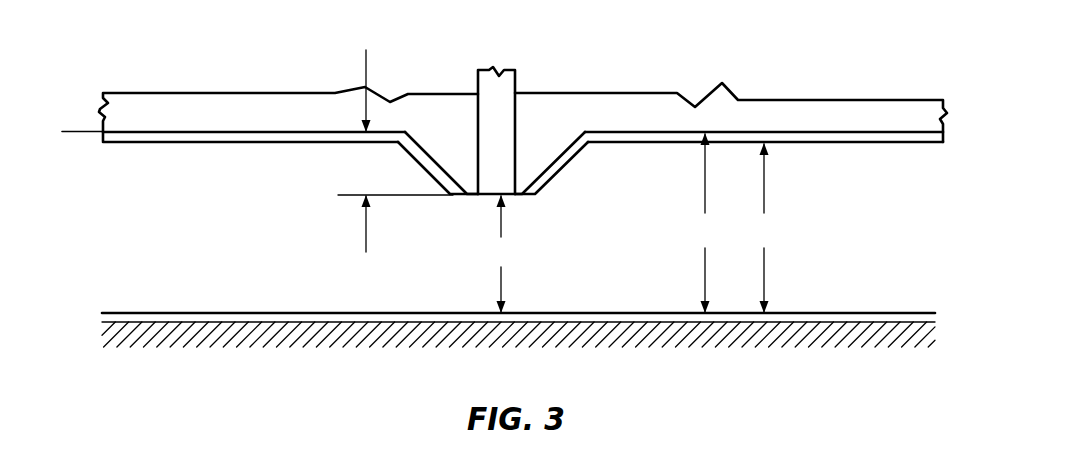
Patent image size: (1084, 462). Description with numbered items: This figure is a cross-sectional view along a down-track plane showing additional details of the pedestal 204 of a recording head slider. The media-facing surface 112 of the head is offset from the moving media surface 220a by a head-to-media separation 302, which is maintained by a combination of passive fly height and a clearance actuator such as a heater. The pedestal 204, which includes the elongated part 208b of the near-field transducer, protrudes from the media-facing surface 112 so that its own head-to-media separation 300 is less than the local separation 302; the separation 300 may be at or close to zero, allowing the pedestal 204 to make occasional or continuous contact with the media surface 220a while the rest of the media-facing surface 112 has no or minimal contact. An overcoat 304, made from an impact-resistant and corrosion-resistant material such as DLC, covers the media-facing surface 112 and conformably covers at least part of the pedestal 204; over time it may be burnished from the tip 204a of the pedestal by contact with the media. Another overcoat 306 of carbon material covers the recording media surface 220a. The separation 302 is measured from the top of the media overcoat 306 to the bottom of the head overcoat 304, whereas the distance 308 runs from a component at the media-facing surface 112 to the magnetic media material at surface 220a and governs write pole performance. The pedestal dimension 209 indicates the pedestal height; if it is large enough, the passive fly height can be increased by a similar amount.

The media-facing surface 112 is at (85, 133).
The pedestal 204 is at (545, 161).
The tip of the pedestal 204a is at (516, 196).
The elongated part of the NFT 208b is at (507, 92).
The pedestal dimension 209 is at (395, 138).
The media surface 220a is at (138, 319).
The HMS of the pedestal 300 is at (502, 254).
The head-to-media separation (HMS) 302 is at (761, 228).
The overcoat 304 is at (270, 135).
The media overcoat 306 is at (240, 317).
The distance 308 is at (700, 223).